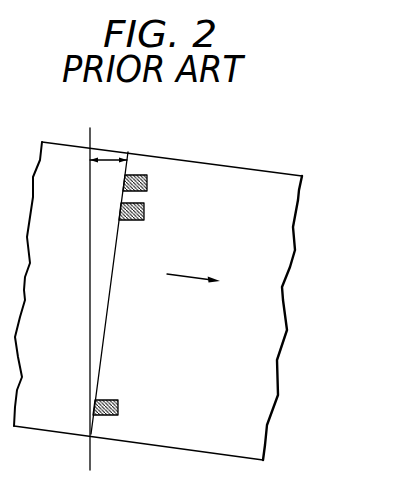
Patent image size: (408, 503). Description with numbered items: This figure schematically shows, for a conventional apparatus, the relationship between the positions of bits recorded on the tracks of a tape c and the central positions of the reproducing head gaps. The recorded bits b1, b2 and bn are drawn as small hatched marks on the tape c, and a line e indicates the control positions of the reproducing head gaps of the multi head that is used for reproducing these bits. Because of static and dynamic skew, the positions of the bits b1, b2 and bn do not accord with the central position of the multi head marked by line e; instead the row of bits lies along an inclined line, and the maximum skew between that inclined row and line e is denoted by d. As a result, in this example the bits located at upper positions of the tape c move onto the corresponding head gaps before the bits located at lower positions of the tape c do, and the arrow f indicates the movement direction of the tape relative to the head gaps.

The tape C is at (60, 148).
The line indicating control positions of reproducing head gaps e is at (91, 142).
The maximum skew d is at (113, 150).
The recorded bit b1 is at (148, 183).
The recorded bit b2 is at (145, 211).
The recorded bit bn is at (119, 408).
The direction of movement f is at (192, 282).